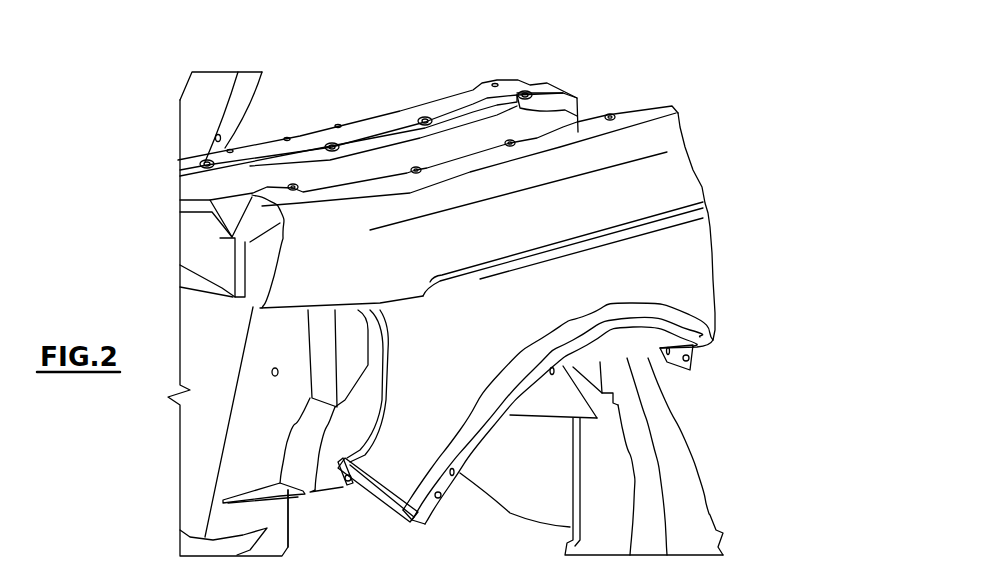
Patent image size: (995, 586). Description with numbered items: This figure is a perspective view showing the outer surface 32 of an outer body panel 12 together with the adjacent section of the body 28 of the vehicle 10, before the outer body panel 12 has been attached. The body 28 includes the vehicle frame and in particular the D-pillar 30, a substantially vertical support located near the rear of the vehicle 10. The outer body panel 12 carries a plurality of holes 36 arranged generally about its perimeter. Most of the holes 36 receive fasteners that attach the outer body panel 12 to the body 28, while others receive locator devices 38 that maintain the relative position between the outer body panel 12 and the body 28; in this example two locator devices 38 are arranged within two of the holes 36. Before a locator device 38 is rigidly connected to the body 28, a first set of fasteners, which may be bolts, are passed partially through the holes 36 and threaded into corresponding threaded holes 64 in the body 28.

The vehicle 10 is at (560, 58).
The outer body panel 12 is at (644, 112).
The body 28 is at (302, 147).
The D-pillar 30 is at (198, 160).
The outer surface 32 is at (550, 175).
The holes 36 is at (293, 183).
The locator devices 38 is at (442, 498).
The threaded holes 64 is at (205, 160).